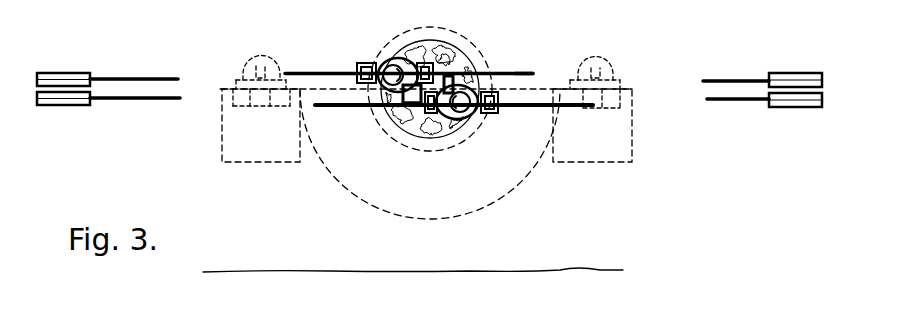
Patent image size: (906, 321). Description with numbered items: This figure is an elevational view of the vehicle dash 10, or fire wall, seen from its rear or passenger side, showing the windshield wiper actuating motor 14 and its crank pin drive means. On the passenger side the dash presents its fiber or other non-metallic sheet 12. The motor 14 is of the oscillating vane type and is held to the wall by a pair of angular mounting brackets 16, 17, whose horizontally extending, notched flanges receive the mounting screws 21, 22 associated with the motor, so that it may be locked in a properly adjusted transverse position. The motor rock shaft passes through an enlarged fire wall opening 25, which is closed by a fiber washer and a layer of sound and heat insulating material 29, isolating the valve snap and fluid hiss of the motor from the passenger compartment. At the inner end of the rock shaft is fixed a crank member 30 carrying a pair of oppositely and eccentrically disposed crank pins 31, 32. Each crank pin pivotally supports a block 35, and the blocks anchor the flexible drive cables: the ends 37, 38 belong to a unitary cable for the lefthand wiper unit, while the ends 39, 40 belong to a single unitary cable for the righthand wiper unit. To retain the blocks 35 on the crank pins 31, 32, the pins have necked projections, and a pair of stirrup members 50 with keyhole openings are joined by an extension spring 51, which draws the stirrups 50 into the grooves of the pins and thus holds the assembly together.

The vehicle dash 10 is at (465, 273).
The non-metallic sheet 12 is at (372, 251).
The windshield wiper actuating motor 14 is at (535, 175).
The angular mounting bracket 16 is at (612, 163).
The angular mounting bracket 17 is at (251, 163).
The mounting screw 21 is at (594, 68).
The mounting screw 22 is at (258, 70).
The fire wall opening 25 is at (452, 68).
The layer of sound and heat insulating material 29 is at (435, 68).
The crank member 30 is at (418, 104).
The crank pin 31 is at (462, 112).
The crank pin 32 is at (390, 72).
The block 35 is at (360, 67).
The drive cable end 37 is at (300, 72).
The drive cable end 38 is at (337, 107).
The drive cable end 39 is at (527, 72).
The drive cable end 40 is at (537, 107).
The stirrup member 50 is at (487, 72).
The extension spring 51 is at (440, 73).